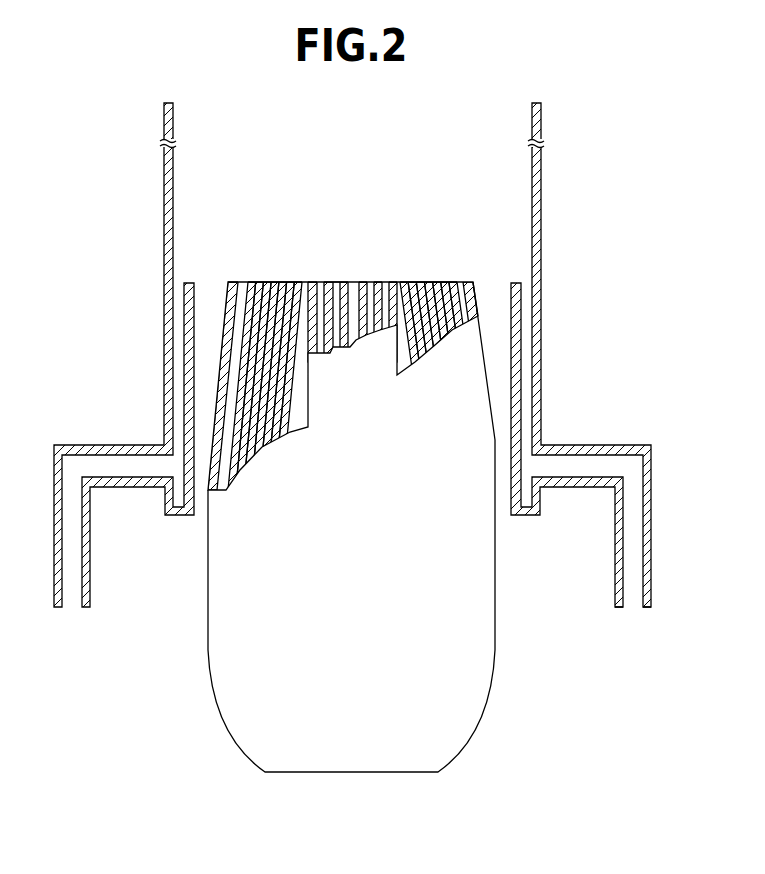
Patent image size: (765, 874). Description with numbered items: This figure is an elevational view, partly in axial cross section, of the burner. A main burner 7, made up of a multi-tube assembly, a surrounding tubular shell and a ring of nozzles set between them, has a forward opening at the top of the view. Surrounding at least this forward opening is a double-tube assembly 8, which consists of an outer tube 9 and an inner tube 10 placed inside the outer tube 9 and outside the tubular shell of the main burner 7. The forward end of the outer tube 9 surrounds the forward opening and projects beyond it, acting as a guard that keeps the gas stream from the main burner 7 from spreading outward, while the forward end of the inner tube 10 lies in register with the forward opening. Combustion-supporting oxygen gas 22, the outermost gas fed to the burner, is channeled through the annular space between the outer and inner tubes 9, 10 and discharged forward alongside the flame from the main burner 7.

The main burner 7 is at (230, 588).
The double-tube assembly 8 is at (363, 399).
The outer tube 9 is at (541, 238).
The inner tube 10 is at (521, 335).
The oxygen gas 22 is at (634, 612).